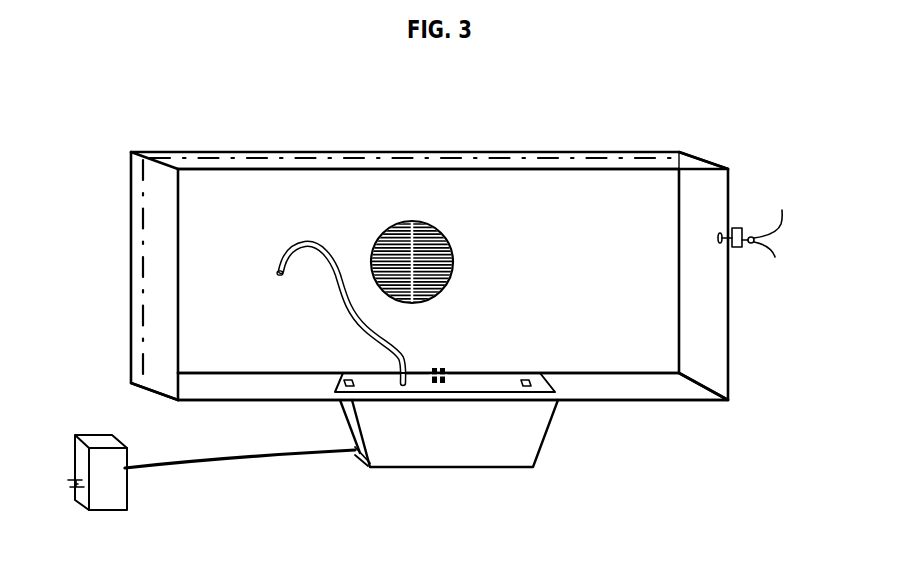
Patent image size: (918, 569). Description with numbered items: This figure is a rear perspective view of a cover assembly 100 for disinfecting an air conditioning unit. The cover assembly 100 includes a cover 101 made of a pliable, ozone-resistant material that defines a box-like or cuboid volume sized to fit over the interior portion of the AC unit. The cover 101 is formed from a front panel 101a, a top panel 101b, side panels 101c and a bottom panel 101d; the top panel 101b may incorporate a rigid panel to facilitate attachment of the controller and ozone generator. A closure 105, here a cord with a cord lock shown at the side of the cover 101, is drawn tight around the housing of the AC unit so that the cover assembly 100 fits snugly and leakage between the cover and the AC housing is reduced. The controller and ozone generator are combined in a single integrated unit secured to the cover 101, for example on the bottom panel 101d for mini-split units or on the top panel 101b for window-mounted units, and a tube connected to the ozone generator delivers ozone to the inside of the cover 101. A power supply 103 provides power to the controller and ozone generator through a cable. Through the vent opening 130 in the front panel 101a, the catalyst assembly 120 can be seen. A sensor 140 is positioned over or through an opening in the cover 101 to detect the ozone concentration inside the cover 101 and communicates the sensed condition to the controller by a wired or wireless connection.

The cover assembly 100 is at (104, 115).
The cover 101 is at (122, 210).
The front panel 101a is at (658, 358).
The top panel 101b is at (273, 151).
The side panels 101c is at (634, 164).
The bottom panel 101d is at (605, 385).
The power supply 103 is at (102, 443).
The closure 105 is at (740, 226).
The catalyst assembly 120 is at (430, 240).
The vent opening 130 is at (453, 244).
The sensor 140 is at (440, 367).